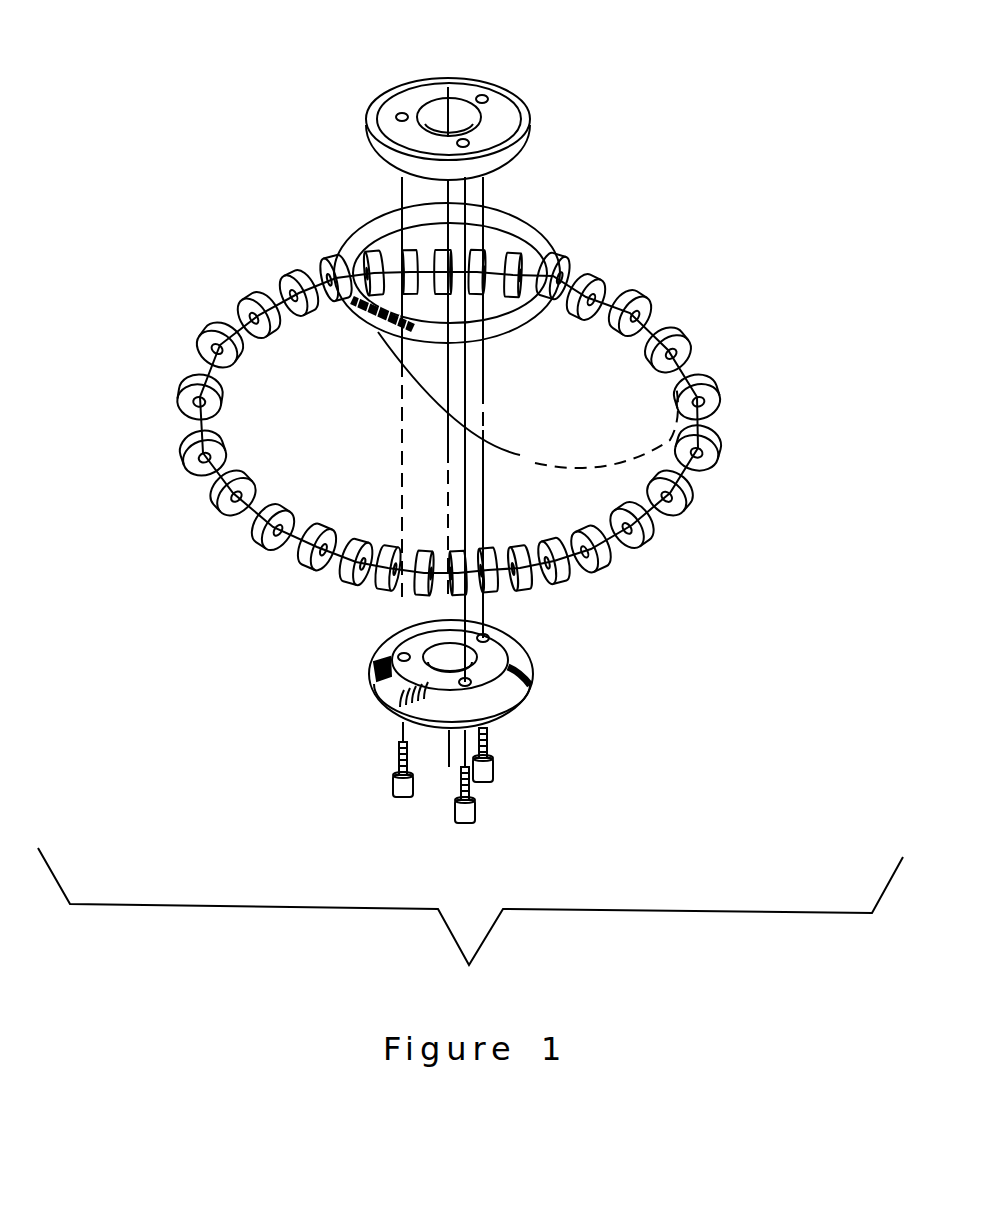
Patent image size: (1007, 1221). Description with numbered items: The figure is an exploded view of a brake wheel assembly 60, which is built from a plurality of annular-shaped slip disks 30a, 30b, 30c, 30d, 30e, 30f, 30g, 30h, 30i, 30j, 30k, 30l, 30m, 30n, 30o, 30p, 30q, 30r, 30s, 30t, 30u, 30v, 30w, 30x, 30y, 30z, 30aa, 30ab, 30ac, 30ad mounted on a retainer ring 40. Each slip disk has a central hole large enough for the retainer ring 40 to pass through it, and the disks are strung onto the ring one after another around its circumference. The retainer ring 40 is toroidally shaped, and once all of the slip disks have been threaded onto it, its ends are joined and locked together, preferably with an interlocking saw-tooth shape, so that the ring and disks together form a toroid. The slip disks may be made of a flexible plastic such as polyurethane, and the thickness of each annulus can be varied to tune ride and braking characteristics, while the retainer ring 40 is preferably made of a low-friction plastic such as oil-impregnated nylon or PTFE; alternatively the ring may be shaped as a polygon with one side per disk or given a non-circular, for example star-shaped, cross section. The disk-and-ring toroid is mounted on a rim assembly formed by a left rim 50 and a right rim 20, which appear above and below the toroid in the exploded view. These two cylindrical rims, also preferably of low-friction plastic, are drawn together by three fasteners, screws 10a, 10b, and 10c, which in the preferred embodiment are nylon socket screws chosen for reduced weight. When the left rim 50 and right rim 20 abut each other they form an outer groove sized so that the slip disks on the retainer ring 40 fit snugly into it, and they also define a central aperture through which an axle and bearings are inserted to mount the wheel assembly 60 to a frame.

The left rim 50 is at (523, 85).
The retainer ring 40 is at (545, 300).
The right rim 20 is at (533, 695).
The wheel assembly 60 is at (470, 932).
The screw 10a is at (393, 798).
The screw 10b is at (473, 827).
The screw 10c is at (488, 787).
The slip disk 30a is at (725, 445).
The slip disk 30b is at (718, 387).
The slip disk 30c is at (688, 337).
The slip disk 30d is at (650, 302).
The slip disk 30e is at (597, 273).
The slip disk 30f is at (557, 257).
The slip disk 30g is at (520, 223).
The slip disk 30h is at (490, 210).
The slip disk 30i is at (423, 205).
The slip disk 30j is at (402, 213).
The slip disk 30k is at (367, 240).
The slip disk 30l is at (333, 258).
The slip disk 30m is at (290, 278).
The slip disk 30n is at (250, 300).
The slip disk 30o is at (213, 337).
The slip disk 30p is at (187, 378).
The slip disk 30q is at (187, 430).
The slip disk 30r is at (213, 477).
The slip disk 30s is at (252, 528).
The slip disk 30t is at (295, 562).
The slip disk 30u is at (338, 582).
The slip disk 30v is at (375, 593).
The slip disk 30w is at (408, 600).
The slip disk 30x is at (455, 597).
The slip disk 30y is at (520, 597).
The slip disk 30z is at (537, 592).
The slip disk 30aa is at (565, 580).
The slip disk 30ab is at (605, 562).
The slip disk 30ac is at (650, 543).
The slip disk 30ad is at (692, 502).